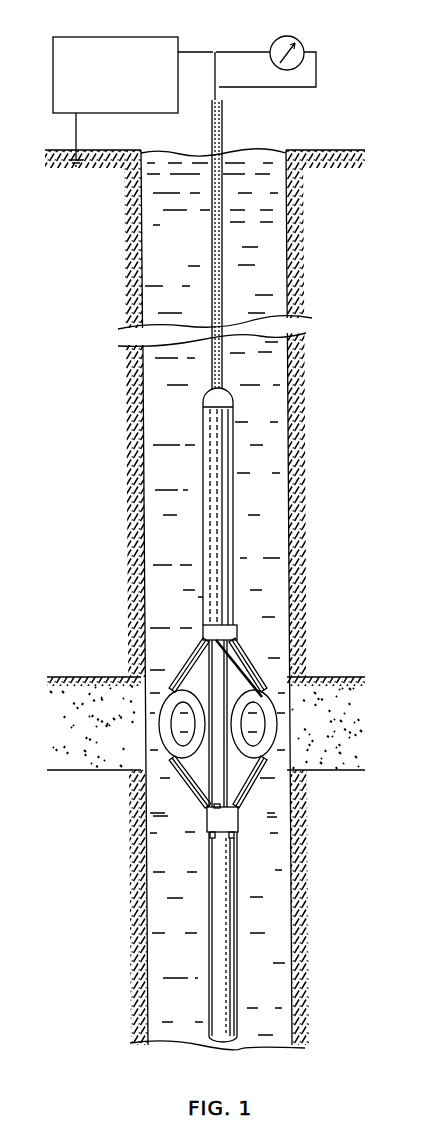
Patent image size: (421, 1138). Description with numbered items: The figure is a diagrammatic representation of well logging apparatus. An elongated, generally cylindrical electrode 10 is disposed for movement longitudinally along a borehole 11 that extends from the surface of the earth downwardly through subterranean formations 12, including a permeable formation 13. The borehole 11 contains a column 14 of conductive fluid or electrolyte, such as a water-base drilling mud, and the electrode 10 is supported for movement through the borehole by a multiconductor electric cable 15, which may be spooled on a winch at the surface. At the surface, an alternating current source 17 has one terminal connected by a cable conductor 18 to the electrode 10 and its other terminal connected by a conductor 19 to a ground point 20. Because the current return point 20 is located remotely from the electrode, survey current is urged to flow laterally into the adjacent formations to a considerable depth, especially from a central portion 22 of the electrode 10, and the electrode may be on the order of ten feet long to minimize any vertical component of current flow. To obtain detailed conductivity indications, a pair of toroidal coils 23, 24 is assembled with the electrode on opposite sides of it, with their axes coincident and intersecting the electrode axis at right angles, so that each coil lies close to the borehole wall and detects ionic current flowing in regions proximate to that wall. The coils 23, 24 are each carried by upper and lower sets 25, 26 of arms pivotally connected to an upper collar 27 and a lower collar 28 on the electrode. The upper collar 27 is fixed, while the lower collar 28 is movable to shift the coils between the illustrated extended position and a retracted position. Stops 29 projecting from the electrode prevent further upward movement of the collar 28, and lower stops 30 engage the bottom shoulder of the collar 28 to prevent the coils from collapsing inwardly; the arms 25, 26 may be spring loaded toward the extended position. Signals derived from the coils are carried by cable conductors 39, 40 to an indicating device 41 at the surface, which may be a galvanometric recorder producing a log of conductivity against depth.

The electrode 10 is at (218, 446).
The borehole 11 is at (143, 433).
The subterranean formations 12 is at (113, 533).
The permeable formation 13 is at (90, 686).
The column of conductive fluid 14 is at (181, 265).
The multiconductor electric cable 15 is at (222, 138).
The alternating current source 17 is at (93, 37).
The cable conductor 18 is at (190, 48).
The conductor 19 is at (76, 137).
The ground point 20 is at (74, 164).
The central portion 22 is at (218, 679).
The toroidal coil 23 is at (170, 758).
The toroidal coil 24 is at (263, 699).
The upper set of arms 25 is at (197, 654).
The lower set of arms 26 is at (199, 808).
The upper collar 27 is at (220, 625).
The lower collar 28 is at (237, 862).
The stops 29 is at (238, 809).
The lower stops 30 is at (204, 842).
The cable conductor 39 is at (232, 48).
The cable conductor 40 is at (316, 82).
The indicating device 41 is at (297, 42).